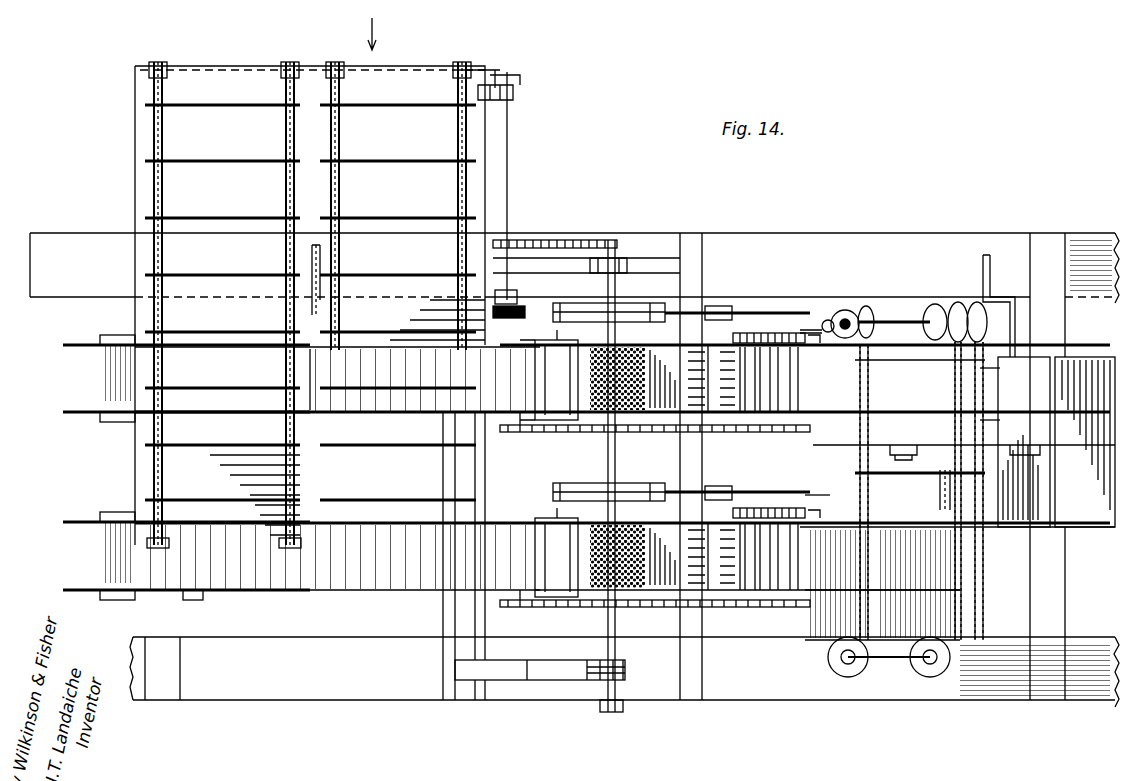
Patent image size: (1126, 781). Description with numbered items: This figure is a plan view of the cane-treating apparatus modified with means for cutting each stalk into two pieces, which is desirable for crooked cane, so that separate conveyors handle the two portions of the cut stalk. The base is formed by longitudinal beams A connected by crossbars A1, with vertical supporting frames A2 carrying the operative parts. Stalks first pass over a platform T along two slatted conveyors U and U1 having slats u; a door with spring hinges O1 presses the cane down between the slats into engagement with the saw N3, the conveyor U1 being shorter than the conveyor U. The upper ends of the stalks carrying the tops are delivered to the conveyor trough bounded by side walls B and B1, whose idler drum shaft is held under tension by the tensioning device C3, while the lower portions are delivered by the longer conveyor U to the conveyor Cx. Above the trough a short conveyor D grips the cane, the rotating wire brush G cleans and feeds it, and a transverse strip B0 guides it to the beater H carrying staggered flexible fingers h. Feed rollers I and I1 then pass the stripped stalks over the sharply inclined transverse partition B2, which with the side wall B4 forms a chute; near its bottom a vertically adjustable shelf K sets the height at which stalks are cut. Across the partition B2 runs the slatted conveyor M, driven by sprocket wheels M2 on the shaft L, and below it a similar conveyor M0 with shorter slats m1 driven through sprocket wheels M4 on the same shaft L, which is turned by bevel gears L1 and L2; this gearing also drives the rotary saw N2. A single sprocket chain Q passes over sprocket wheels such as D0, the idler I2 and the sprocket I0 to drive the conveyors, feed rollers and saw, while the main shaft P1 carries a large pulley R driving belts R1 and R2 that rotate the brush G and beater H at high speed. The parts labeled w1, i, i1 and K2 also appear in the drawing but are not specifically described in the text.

The longitudinal beams A is at (764, 238).
The crossbars A1 is at (696, 245).
The vertical supporting frames A2 is at (494, 683).
The platform T is at (135, 130).
The slatted conveyor U is at (212, 105).
The slats u is at (238, 105).
The slatted conveyor U1 is at (418, 105).
The actuating rod w1 is at (480, 158).
The saw N3 is at (325, 265).
The main shaft P1 is at (617, 243).
The belt R1 is at (637, 262).
The large pulley R is at (566, 304).
The belt R2 is at (716, 306).
The short conveyor D is at (515, 378).
The conveyor Cx is at (418, 523).
The sprocket chain Q is at (540, 432).
The sprocket wheel D0 is at (516, 432).
The brush G is at (590, 378).
The transverse strip B0 is at (668, 415).
The staggered fingers h is at (695, 352).
The beater H is at (718, 413).
The feed roller I is at (748, 415).
The idler I2 is at (760, 415).
The sprocket I0 is at (785, 415).
The feed roller I1 is at (792, 345).
The rack i is at (764, 332).
The pawl i1 is at (815, 335).
The transverse partition B2 is at (85, 590).
The bevel gear L2 is at (832, 320).
The bevel gear L1 is at (848, 318).
The shaft L is at (886, 320).
The sprocket wheels M2 is at (872, 302).
The sprocket wheels M4 is at (977, 303).
The slatted conveyor M is at (957, 511).
The conveyor M0 is at (990, 368).
The shorter slats m1 is at (992, 420).
The spring hinges O1 is at (905, 462).
The rotary saw N2 is at (940, 505).
The pipe K2 is at (990, 255).
The shelf K is at (1042, 400).
The side wall B4 is at (1085, 445).
The side wall B is at (76, 345).
The side wall B1 is at (72, 412).
The tensioning device C3 is at (110, 335).